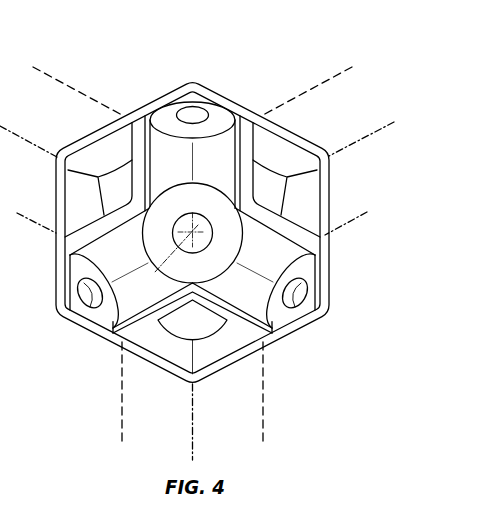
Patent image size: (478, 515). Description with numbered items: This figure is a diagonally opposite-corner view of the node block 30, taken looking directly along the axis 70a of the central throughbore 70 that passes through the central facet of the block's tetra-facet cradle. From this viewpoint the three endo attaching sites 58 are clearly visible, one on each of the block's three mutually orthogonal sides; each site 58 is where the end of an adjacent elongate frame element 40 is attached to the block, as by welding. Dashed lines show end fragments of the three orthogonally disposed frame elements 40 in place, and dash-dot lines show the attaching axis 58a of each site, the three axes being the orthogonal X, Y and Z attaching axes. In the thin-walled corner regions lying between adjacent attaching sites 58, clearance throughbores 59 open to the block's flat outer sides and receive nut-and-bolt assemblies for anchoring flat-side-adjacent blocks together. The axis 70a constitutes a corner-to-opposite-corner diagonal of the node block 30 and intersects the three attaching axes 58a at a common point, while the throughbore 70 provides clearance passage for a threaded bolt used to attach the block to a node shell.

The node block 30 is at (240, 88).
The frame element 40 is at (73, 92).
The endo attaching site 58 is at (80, 242).
The attaching axis 58a is at (32, 145).
The clearance throughbore 59 is at (203, 114).
The bolt-shank-clearance throughbore 70 is at (176, 227).
The axis 70a is at (165, 260).